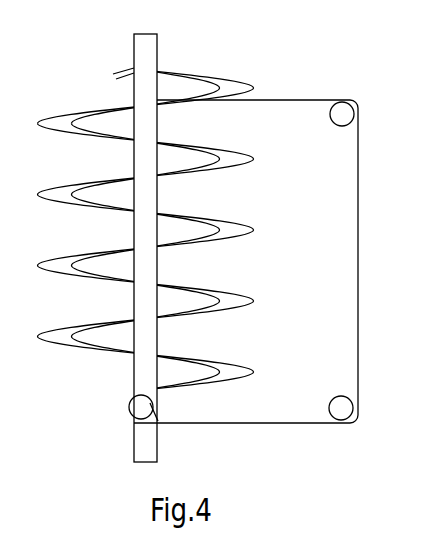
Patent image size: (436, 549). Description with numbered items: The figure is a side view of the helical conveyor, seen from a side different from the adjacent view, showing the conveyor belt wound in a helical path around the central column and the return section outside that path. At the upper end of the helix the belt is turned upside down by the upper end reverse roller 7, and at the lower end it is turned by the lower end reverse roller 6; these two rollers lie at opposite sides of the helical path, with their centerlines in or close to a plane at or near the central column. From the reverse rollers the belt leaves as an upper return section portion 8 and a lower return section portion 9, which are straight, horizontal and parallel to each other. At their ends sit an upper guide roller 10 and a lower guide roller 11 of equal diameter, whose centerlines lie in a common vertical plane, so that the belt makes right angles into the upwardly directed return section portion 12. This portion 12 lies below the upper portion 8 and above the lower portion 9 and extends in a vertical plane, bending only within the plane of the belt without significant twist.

The lower end reverse roller 6 is at (140, 404).
The upper end reverse roller 7 is at (127, 86).
The upper return section portion 8 is at (285, 98).
The lower return section portion 9 is at (267, 425).
The upper guide roller 10 is at (343, 104).
The lower guide roller 11 is at (353, 416).
The upwardly directed return section portion 12 is at (362, 237).